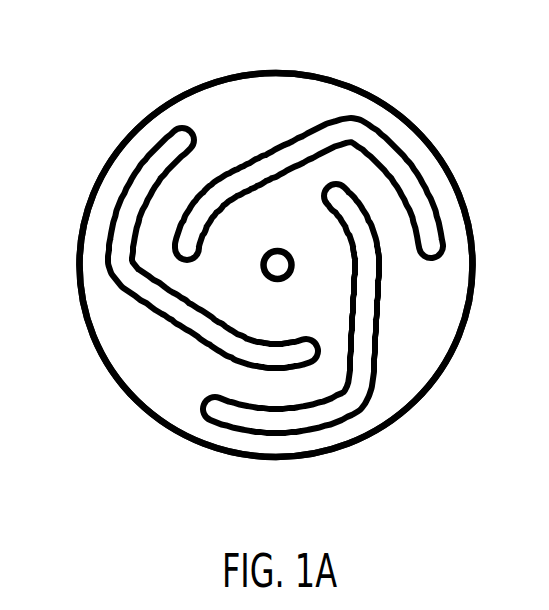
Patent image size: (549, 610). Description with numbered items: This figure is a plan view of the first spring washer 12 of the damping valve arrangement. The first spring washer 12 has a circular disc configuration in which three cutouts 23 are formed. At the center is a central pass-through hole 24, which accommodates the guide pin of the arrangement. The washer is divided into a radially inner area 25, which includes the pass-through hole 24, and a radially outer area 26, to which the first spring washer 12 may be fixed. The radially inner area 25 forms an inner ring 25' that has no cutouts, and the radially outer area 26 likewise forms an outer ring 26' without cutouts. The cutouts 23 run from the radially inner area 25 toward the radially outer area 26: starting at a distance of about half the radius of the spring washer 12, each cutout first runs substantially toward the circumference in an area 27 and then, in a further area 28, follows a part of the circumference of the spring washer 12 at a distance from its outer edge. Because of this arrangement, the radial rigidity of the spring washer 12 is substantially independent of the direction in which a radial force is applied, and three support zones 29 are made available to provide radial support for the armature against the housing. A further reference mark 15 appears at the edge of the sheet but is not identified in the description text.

The diaphragm disc 12 is at (428, 452).
The slot 23 is at (137, 178).
The central opening 24 is at (262, 268).
The tongue 25 is at (127, 224).
The tongue 25' is at (302, 117).
The outer ring portion 26 is at (461, 405).
The outer ring portion 26' is at (474, 349).
The web 27 is at (242, 160).
The rim 28 is at (423, 163).
The connecting web 29 is at (185, 180).
The housing 15 is at (543, 433).